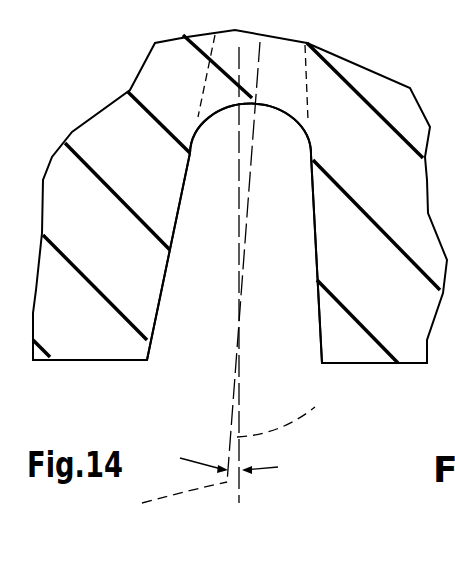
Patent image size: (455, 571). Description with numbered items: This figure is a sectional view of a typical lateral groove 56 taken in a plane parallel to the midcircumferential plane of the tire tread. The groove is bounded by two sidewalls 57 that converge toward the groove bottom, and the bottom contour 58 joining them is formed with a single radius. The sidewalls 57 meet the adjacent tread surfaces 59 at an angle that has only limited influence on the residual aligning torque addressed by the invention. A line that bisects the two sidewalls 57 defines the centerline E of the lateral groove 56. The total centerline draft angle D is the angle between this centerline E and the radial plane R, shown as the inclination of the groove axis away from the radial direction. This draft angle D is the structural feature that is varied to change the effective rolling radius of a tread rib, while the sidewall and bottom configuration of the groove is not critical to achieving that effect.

The lateral groove 56 is at (207, 340).
The sidewalls 57 is at (178, 223).
The bottom contour 58 is at (283, 113).
The surface 59 is at (362, 365).
The radial plane R is at (280, 409).
The total centerline draft angle D is at (240, 462).
The centerline E is at (174, 500).